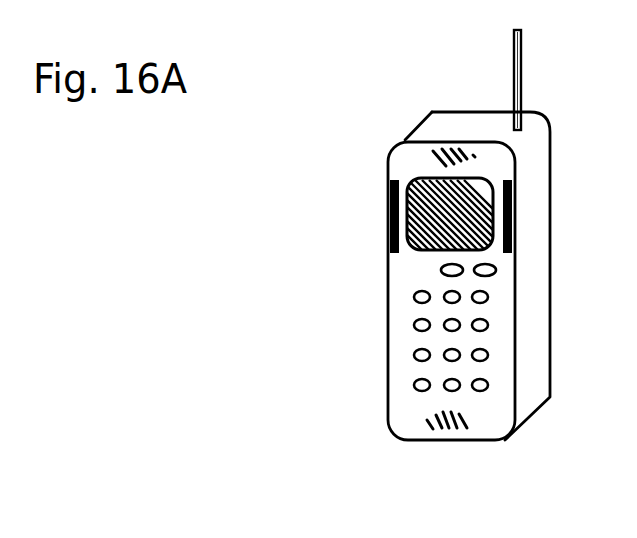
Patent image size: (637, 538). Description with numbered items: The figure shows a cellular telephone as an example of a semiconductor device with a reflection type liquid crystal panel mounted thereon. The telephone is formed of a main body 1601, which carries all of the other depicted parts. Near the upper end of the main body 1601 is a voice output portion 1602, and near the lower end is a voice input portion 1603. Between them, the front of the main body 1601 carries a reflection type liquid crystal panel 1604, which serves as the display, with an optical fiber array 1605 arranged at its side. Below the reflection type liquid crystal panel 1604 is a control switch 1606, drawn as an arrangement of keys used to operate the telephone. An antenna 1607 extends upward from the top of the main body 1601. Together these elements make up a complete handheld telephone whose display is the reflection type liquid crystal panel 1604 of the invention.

The main body 1601 is at (468, 120).
The voice output portion 1602 is at (452, 157).
The voice input portion 1603 is at (447, 440).
The reflection type liquid crystal panel 1604 is at (398, 208).
The optical fiber array 1605 is at (392, 240).
The control switch 1606 is at (420, 355).
The antenna 1607 is at (523, 78).